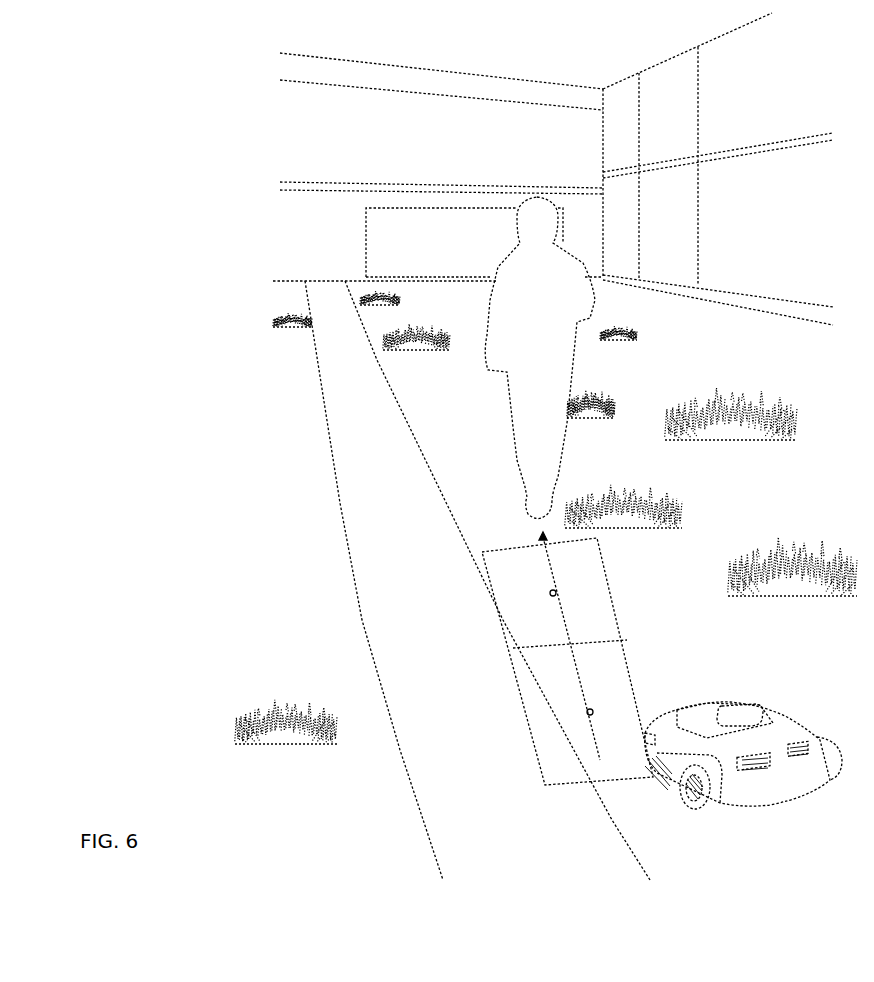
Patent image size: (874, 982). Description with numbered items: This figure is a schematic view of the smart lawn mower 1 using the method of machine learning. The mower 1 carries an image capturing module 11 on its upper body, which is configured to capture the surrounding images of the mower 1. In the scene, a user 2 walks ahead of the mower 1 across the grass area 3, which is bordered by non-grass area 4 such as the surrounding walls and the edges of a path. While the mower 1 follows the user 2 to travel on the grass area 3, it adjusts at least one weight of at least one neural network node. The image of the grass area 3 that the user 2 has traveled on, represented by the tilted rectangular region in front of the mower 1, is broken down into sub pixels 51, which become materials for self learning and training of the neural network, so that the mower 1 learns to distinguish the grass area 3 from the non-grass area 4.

The smart lawn mower 1 is at (694, 688).
The image capturing module 11 is at (738, 712).
The user 2 is at (597, 310).
The grass area 3 is at (651, 378).
The non-grass area 4 is at (462, 73).
The sub pixels 51 is at (535, 686).